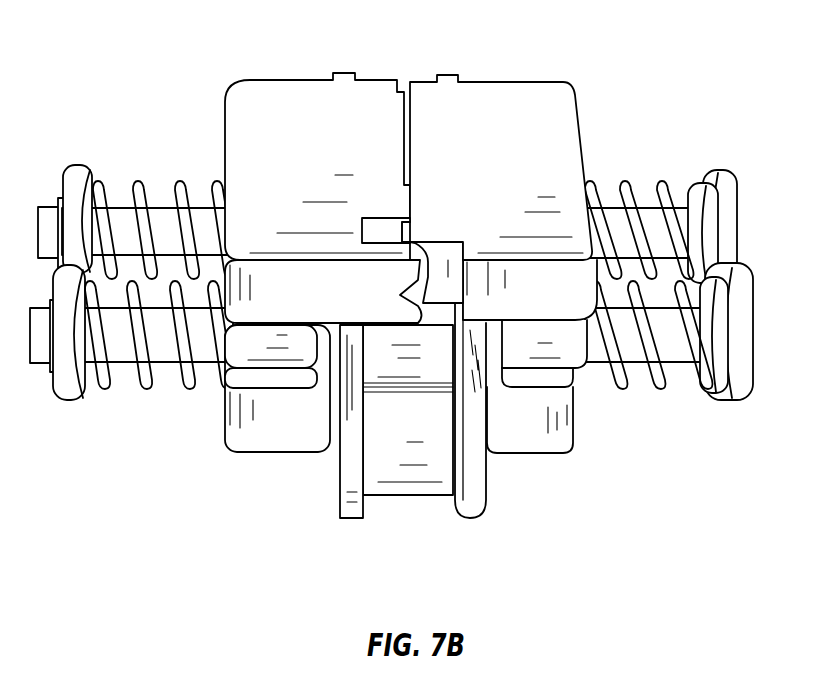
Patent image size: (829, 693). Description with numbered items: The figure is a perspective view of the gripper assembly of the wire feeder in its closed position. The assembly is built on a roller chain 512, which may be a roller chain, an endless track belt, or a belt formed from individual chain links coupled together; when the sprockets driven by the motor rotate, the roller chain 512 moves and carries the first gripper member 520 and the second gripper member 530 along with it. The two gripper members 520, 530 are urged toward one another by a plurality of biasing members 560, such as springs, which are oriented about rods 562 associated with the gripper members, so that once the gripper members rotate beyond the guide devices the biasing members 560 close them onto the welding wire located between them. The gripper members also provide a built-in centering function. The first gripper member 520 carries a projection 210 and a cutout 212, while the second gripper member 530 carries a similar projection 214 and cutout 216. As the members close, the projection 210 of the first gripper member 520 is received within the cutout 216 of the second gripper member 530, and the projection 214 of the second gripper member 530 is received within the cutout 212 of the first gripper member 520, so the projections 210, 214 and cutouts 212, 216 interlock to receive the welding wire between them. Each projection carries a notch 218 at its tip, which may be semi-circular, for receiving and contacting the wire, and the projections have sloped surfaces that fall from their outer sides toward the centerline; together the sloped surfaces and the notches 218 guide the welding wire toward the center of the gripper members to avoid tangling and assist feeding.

The projection 210 is at (390, 300).
The cutout 212 is at (382, 230).
The projection 214 is at (413, 232).
The cutout 216 is at (468, 295).
The notch 218 is at (405, 312).
The roller chain 512 is at (487, 503).
The first gripper member 520 is at (250, 80).
The second gripper member 530 is at (563, 100).
The biasing member 560 is at (150, 387).
The rod 562 is at (123, 225).